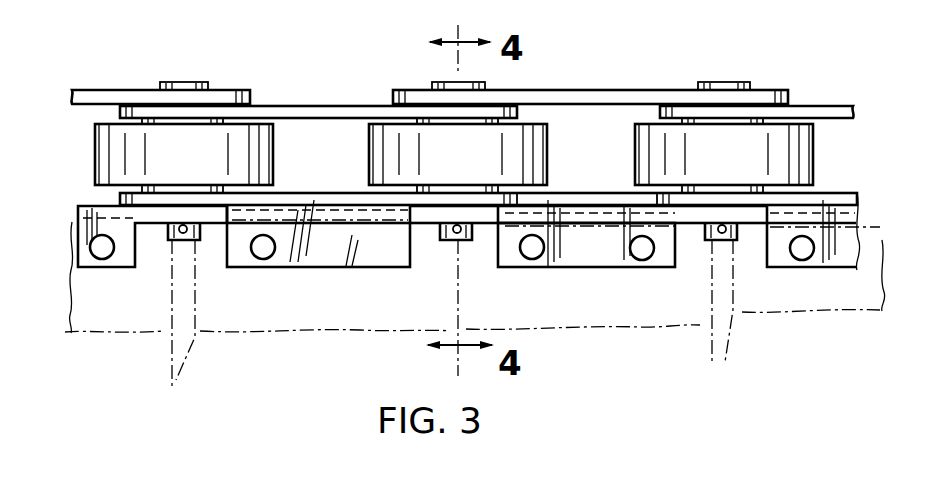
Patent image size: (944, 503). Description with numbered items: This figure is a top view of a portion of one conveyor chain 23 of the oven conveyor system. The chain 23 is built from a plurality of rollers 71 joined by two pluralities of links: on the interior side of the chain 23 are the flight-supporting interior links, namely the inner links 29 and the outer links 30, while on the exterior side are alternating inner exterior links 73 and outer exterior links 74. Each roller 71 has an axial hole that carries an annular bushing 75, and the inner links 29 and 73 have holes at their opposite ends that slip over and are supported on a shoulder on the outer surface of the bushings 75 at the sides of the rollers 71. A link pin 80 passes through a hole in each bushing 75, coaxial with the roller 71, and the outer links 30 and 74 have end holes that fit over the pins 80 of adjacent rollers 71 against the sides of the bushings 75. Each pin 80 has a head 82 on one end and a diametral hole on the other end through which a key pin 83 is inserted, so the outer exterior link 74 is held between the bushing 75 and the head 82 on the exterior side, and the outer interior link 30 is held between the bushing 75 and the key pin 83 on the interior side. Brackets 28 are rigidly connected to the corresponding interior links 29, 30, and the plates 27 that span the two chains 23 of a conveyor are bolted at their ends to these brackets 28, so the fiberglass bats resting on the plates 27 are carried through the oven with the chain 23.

The chain 23 is at (366, 17).
The plate 27 is at (450, 329).
The bracket 28 is at (117, 272).
The inner interior link 29 is at (177, 200).
The outer interior link 30 is at (215, 214).
The roller 71 is at (267, 152).
The inner exterior link 73 is at (310, 110).
The outer exterior link 74 is at (96, 97).
The bushing 75 is at (178, 115).
The link pin 80 is at (167, 241).
The head 82 is at (160, 88).
The key pin 83 is at (183, 242).